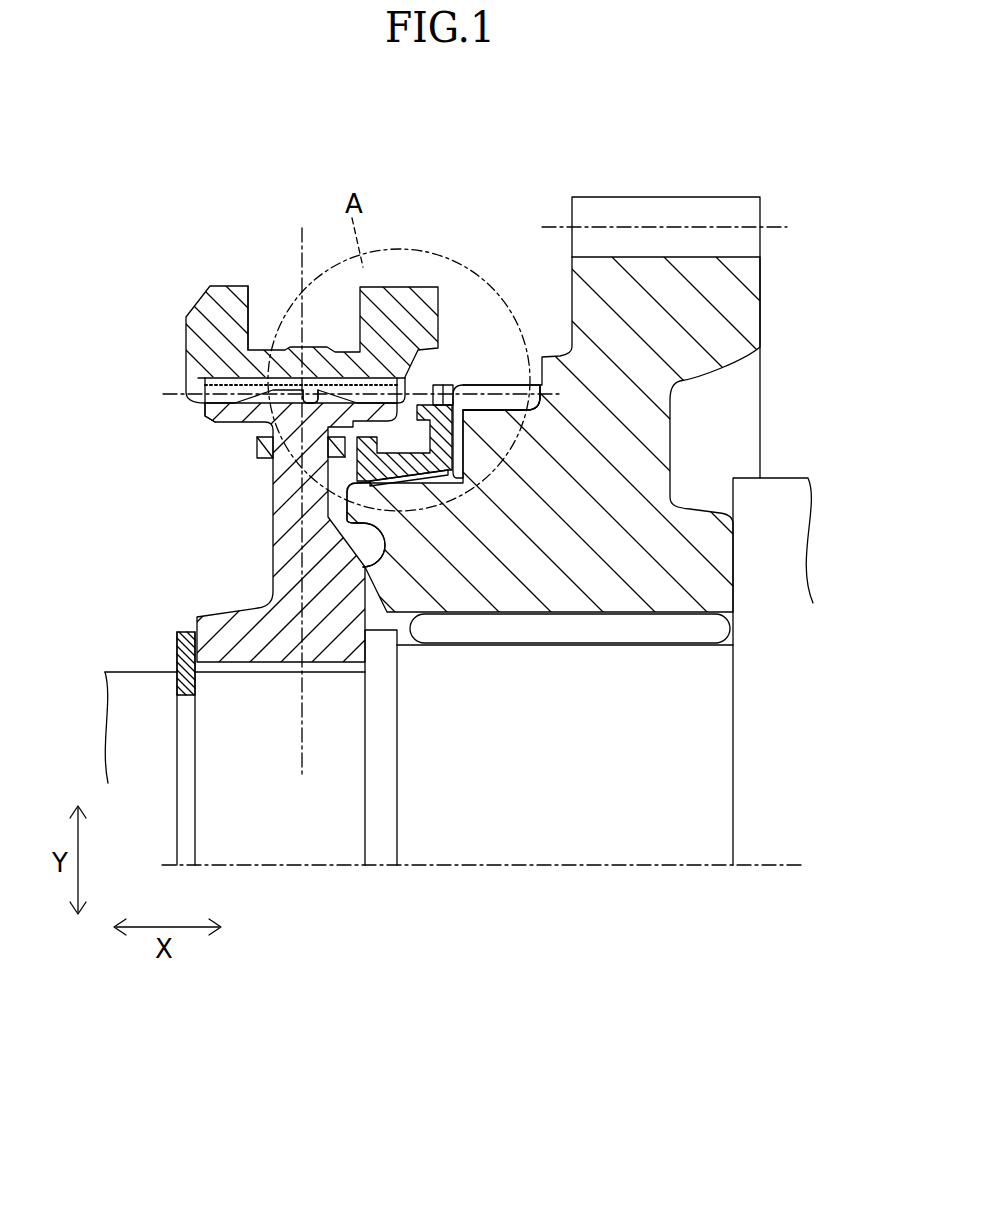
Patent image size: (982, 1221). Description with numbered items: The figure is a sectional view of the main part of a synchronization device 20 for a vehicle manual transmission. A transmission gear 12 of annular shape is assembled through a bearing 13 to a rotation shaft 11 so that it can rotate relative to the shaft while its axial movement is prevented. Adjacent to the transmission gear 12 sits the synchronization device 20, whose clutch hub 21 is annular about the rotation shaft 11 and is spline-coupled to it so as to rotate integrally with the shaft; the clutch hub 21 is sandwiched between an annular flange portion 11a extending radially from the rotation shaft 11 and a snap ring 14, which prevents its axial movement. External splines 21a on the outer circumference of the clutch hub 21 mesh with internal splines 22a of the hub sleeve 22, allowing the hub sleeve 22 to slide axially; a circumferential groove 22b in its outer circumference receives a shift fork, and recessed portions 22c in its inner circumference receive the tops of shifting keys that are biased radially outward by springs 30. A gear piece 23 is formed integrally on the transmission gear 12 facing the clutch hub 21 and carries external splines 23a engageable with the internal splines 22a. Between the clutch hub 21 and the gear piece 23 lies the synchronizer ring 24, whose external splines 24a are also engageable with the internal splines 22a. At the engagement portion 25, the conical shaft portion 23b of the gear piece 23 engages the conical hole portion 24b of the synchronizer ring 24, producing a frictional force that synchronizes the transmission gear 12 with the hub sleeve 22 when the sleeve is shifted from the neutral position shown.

The rotation shaft 11 is at (552, 862).
The annular flange portion 11a is at (372, 818).
The transmission gear 12 is at (750, 305).
The bearing 13 is at (603, 642).
The snap ring 14 is at (177, 647).
The synchronization device 20 is at (448, 289).
The clutch hub 21 is at (272, 580).
The external splines 21a is at (205, 420).
The hub sleeve 22 is at (202, 305).
The internal splines 22a is at (188, 393).
The circumferential groove 22b is at (249, 307).
The recessed portions 22c is at (320, 380).
The gear piece 23 is at (493, 472).
The external splines 23a is at (493, 387).
The conical shaft portion 23b is at (362, 524).
The synchronizer ring 24 is at (435, 475).
The external splines 24a is at (446, 386).
The conical hole portion 24b is at (372, 484).
The engagement portion 25 is at (288, 518).
The springs 30 is at (328, 452).